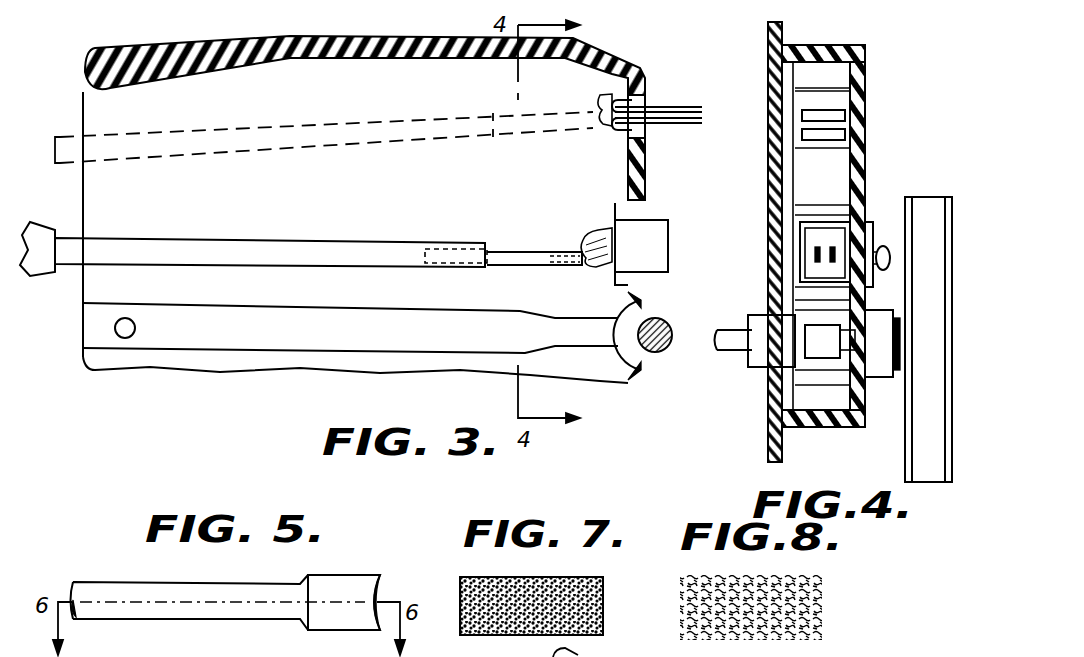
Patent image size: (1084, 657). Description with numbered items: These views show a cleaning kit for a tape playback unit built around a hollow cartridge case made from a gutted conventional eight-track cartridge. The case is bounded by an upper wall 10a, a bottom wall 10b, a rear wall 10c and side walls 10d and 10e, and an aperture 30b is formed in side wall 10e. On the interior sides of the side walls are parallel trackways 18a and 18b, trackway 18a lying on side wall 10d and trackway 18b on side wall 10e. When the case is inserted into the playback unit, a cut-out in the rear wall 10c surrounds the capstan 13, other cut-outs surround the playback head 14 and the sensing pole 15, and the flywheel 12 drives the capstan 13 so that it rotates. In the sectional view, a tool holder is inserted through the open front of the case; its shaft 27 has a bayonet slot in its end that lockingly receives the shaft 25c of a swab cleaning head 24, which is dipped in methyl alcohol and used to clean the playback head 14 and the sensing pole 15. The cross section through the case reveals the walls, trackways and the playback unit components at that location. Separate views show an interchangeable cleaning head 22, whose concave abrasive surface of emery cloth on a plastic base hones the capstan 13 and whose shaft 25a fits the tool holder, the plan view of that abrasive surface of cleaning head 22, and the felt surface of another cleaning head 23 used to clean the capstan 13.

In FIG. 3, the upper wall 10a is at (340, 42).
In FIG. 4, the upper wall 10a is at (820, 45).
In FIG. 4, the bottom wall 10b is at (812, 427).
In FIG. 3, the rear wall 10c is at (647, 166).
In FIG. 4, the side wall 10d is at (865, 135).
In FIG. 4, the side wall 10e is at (775, 177).
In FIG. 4, the flywheel 12 is at (927, 203).
In FIG. 3, the capstan 13 is at (653, 354).
In FIG. 4, the capstan 13 is at (810, 350).
In FIG. 3, the playback head 14 is at (660, 268).
In FIG. 4, the playback head 14 is at (840, 232).
In FIG. 3, the sensing pole 15 is at (681, 108).
In FIG. 4, the sensing pole 15 is at (847, 112).
In FIG. 4, the trackway 18a is at (857, 318).
In FIG. 3, the trackway 18b is at (256, 332).
In FIG. 4, the trackway 18b is at (788, 322).
In FIG. 5, the cleaning head 22 is at (378, 587).
In FIG. 7, the cleaning head 22 is at (587, 580).
In FIG. 8, the cleaning head 23 is at (823, 588).
In FIG. 3, the cleaning head 24 is at (600, 232).
In FIG. 5, the shaft 25a is at (197, 585).
In FIG. 3, the shaft 25c is at (510, 250).
In FIG. 3, the shaft 27 is at (248, 238).
In FIG. 3, the aperture 30b is at (136, 328).